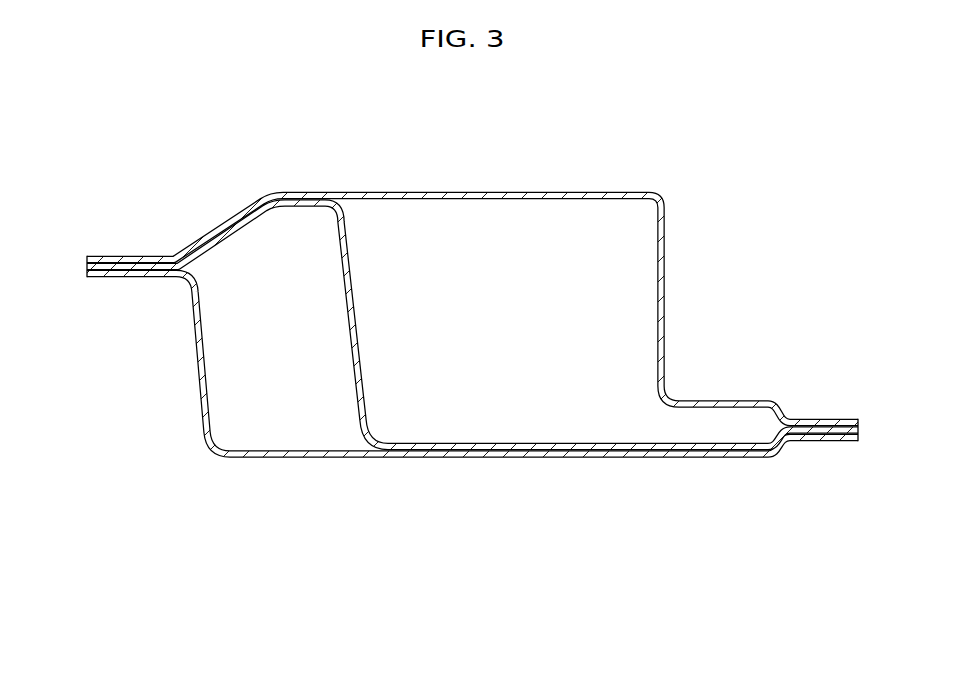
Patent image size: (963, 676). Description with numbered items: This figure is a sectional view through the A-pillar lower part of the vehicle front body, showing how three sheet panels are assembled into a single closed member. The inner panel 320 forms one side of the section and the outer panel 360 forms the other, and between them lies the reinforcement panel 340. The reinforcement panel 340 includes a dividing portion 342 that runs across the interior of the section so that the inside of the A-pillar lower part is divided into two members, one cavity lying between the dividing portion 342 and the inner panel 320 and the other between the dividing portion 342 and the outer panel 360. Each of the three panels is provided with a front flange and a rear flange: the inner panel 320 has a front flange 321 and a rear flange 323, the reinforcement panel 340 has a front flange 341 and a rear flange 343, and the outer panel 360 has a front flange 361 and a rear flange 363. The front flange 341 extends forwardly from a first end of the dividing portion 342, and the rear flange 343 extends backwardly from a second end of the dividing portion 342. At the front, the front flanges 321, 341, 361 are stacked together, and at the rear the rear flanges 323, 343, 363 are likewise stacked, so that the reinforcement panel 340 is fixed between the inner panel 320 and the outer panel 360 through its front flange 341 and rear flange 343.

The inner panel 320 is at (444, 421).
The front flange 321 is at (117, 290).
The rear flange 323 is at (827, 456).
The reinforcement panel 340 is at (469, 327).
The front flange 341 is at (115, 336).
The dividing portion 342 is at (373, 193).
The rear flange 343 is at (824, 499).
The outer panel 360 is at (490, 327).
The front flange 361 is at (132, 332).
The rear flange 363 is at (852, 496).